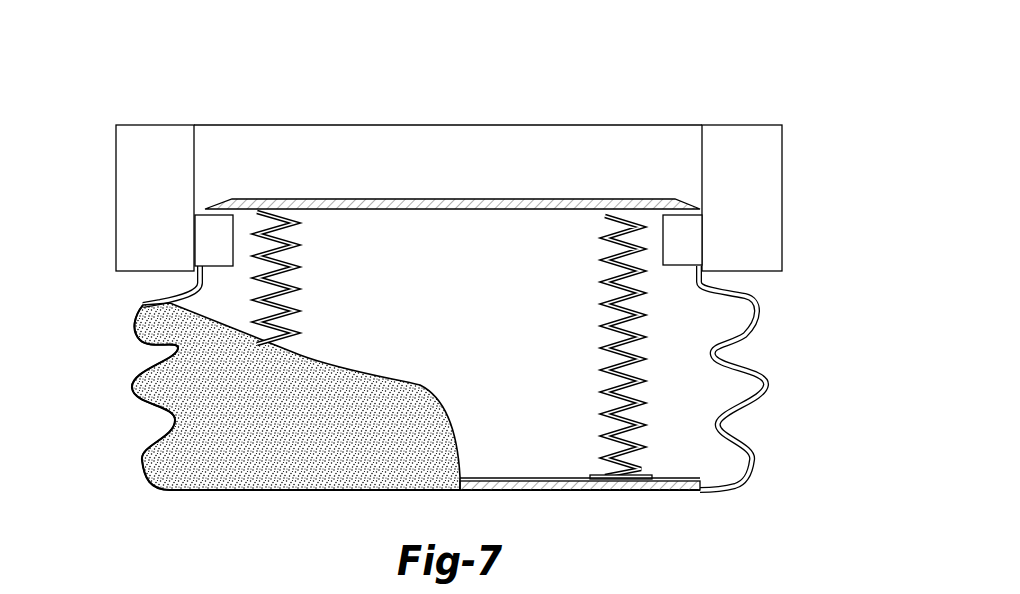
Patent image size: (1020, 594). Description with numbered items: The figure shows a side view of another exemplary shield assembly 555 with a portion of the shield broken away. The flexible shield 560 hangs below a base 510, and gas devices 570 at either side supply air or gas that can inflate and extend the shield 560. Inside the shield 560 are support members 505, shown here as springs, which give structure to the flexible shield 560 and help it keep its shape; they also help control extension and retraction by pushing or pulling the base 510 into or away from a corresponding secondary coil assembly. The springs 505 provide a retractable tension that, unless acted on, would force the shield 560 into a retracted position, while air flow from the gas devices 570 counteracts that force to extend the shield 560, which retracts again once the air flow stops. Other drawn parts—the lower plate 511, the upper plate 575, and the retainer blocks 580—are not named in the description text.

The support members 505 is at (295, 256).
The base 510 is at (458, 147).
The lower plate 511 is at (570, 480).
The shield assembly 555 is at (752, 82).
The shield 560 is at (768, 385).
The gas device 570 is at (138, 168).
The seal plate 575 is at (253, 217).
The retainer block 580 is at (212, 233).